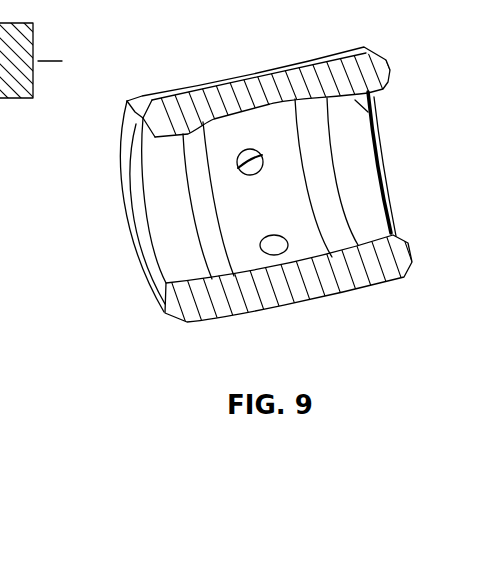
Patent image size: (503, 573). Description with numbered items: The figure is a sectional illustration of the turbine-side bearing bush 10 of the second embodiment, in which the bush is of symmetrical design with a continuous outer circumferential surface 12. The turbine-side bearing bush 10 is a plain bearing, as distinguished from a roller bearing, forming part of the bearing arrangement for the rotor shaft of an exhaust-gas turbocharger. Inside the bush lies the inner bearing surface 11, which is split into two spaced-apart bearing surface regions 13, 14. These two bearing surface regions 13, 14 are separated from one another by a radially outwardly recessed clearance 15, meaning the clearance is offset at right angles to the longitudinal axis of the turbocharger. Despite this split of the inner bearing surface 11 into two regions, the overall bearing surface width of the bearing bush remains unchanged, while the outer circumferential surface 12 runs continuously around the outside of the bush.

The turbine-side bearing bush 10 is at (270, 225).
The inner bearing surface 11 is at (194, 181).
The outer circumferential surface 12 is at (317, 312).
The bearing surface region 13 is at (169, 148).
The bearing surface region 14 is at (370, 110).
The radially outwardly recessed clearance 15 is at (263, 110).